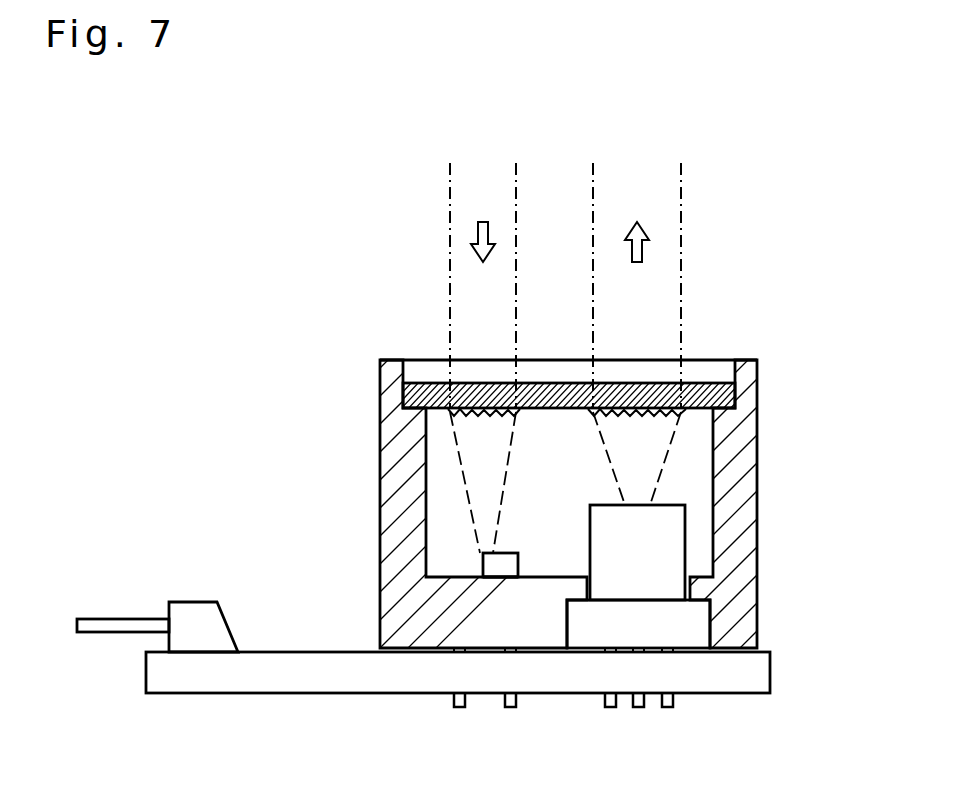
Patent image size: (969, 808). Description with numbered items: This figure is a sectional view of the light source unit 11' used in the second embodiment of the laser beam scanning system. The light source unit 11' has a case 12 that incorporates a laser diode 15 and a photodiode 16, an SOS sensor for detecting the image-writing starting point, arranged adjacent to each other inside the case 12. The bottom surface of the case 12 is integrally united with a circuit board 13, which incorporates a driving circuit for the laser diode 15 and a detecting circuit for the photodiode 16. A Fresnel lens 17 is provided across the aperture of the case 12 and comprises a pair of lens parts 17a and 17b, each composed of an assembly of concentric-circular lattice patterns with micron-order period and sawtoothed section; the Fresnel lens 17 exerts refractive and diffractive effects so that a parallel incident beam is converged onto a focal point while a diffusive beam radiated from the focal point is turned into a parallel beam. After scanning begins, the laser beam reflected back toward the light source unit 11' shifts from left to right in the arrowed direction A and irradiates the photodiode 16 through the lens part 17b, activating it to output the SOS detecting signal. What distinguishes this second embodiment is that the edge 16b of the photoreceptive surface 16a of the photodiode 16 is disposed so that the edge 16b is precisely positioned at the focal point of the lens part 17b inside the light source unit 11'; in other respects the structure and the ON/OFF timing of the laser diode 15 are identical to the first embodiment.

The light source unit 11' is at (537, 304).
The case 12 is at (380, 497).
The circuit board 13 is at (392, 694).
The laser diode 15 is at (592, 503).
The photodiode 16 is at (518, 562).
The photoreceptive surface 16a is at (505, 552).
The edge 16b is at (483, 565).
The Fresnel lens 17 is at (705, 360).
The lens part 17a is at (638, 414).
The lens part 17b is at (486, 414).